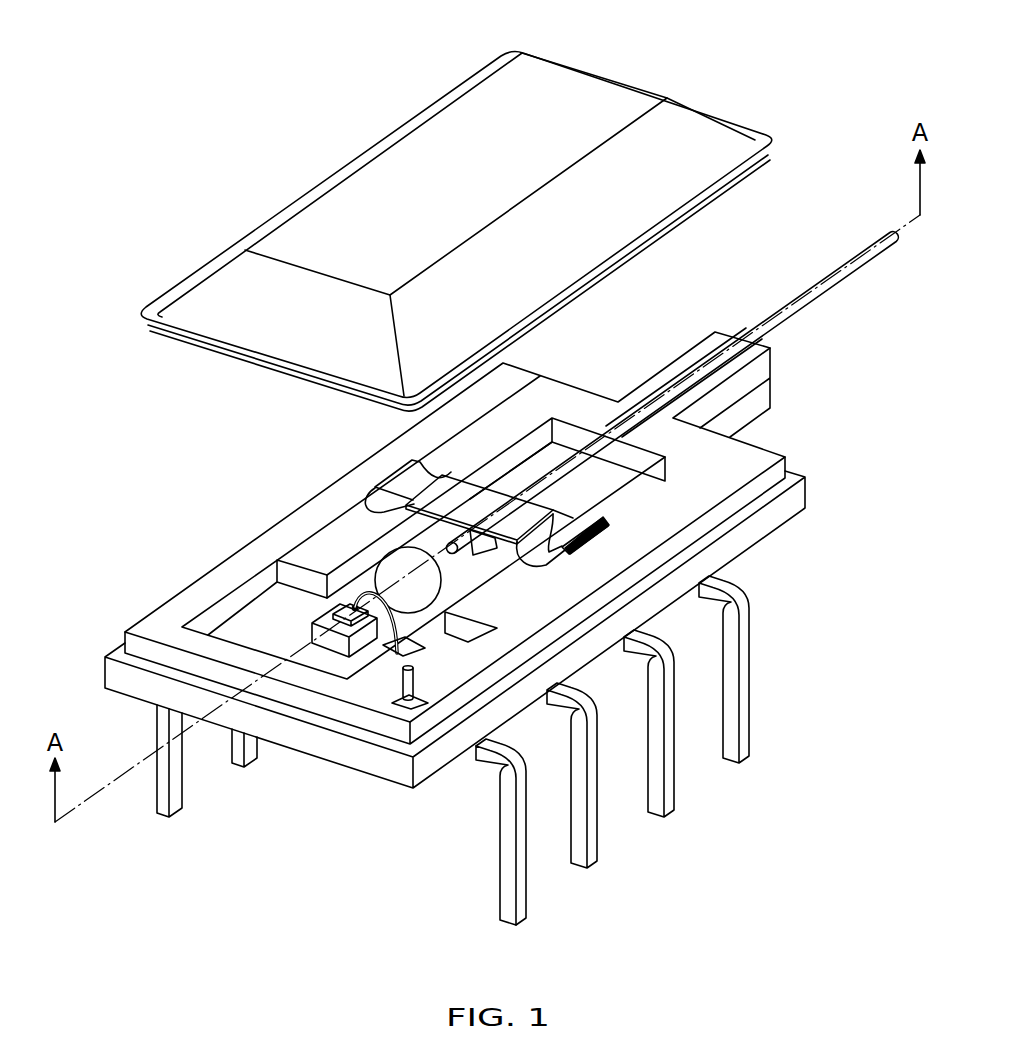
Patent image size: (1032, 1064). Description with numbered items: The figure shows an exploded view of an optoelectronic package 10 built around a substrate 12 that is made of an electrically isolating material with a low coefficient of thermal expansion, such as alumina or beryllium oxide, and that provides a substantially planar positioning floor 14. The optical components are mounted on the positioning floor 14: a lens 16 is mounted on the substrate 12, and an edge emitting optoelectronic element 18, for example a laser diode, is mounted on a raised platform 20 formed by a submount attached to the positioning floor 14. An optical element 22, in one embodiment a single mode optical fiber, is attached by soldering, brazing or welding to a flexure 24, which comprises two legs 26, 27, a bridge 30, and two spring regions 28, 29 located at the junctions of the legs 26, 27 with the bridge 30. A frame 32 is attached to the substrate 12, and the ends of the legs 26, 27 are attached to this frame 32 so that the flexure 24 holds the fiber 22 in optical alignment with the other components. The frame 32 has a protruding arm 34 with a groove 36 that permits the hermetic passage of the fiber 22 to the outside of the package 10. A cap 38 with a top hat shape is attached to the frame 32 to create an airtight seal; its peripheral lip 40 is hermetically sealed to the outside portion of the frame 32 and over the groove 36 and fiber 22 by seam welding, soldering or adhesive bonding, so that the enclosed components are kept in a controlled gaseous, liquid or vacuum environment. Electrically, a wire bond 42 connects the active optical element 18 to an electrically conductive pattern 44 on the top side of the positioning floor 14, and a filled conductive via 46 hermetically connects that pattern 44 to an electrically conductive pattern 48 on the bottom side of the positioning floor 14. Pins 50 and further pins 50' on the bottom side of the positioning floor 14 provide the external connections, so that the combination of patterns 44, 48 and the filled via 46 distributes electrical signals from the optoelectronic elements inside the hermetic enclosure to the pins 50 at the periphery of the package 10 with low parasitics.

The package 10 is at (210, 101).
The substrate 12 is at (797, 497).
The positioning floor 14 is at (257, 627).
The lens 16 is at (383, 573).
The edge emitting optoelectronic element 18 is at (327, 633).
The raised platform 20 is at (348, 650).
The optical element 22 is at (836, 289).
The flexure 24 is at (488, 543).
The leg 26 is at (397, 487).
The leg 27 is at (583, 530).
The spring region 28 is at (450, 482).
The spring region 29 is at (560, 515).
The bridge 30 is at (487, 503).
The frame 32 is at (267, 533).
The protruding arm 34 is at (701, 342).
The groove 36 is at (660, 373).
The cap 38 is at (570, 86).
The peripheral lip 40 is at (758, 148).
The wire bond 42 is at (403, 622).
The electrically conductive pattern 44 is at (397, 667).
The filled conductive via 46 is at (417, 683).
The electrically conductive pattern 48 is at (467, 733).
The pins 50 is at (539, 843).
The leads 50' is at (648, 744).